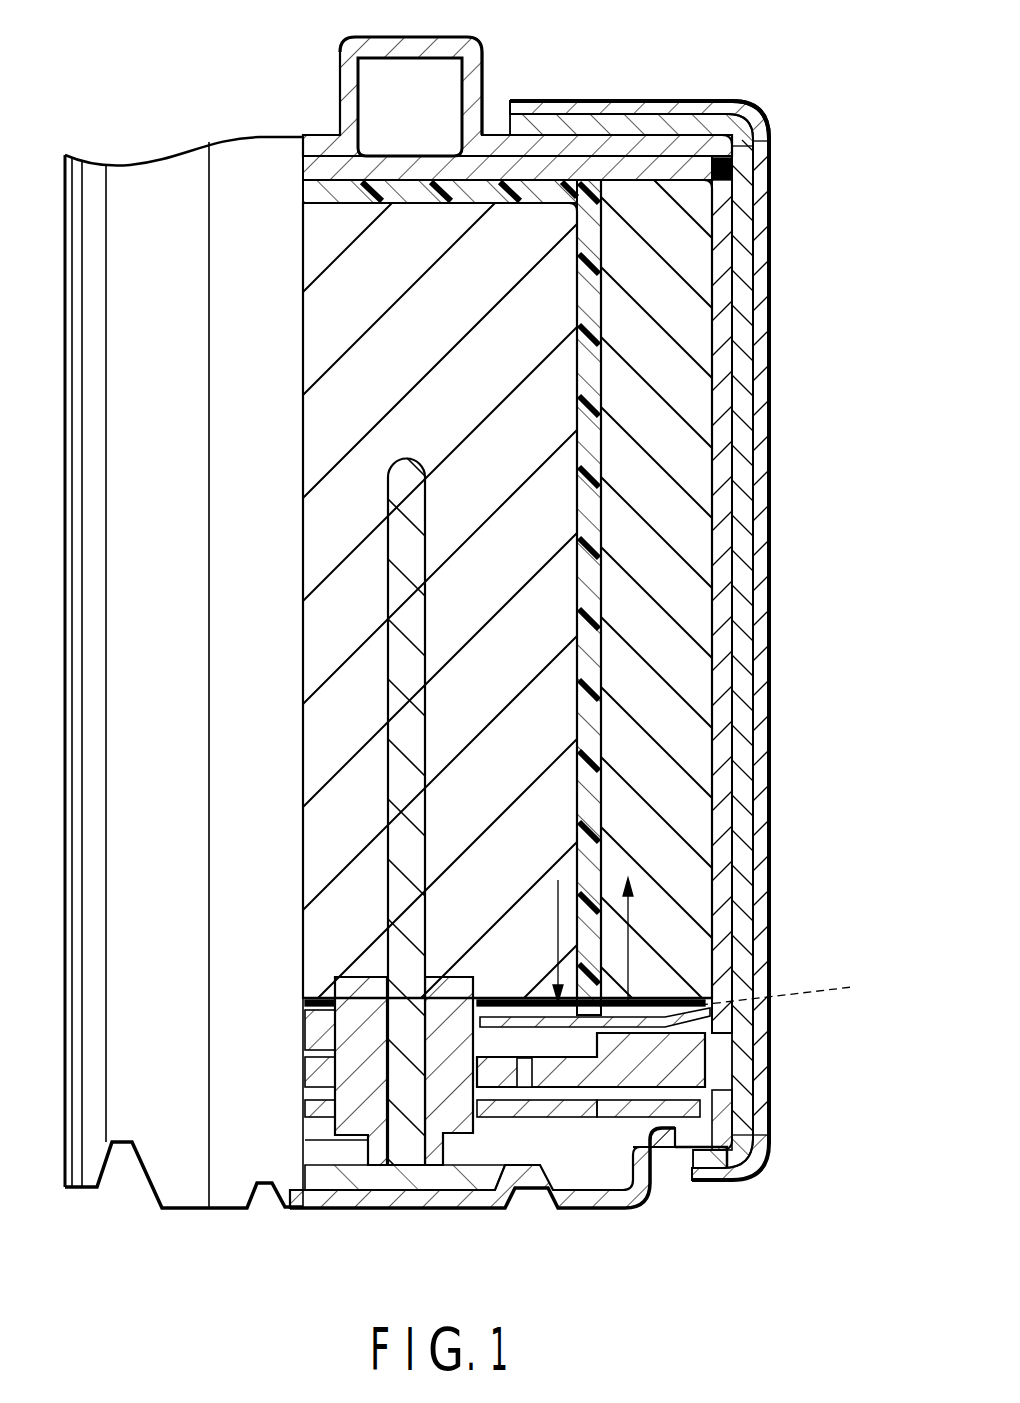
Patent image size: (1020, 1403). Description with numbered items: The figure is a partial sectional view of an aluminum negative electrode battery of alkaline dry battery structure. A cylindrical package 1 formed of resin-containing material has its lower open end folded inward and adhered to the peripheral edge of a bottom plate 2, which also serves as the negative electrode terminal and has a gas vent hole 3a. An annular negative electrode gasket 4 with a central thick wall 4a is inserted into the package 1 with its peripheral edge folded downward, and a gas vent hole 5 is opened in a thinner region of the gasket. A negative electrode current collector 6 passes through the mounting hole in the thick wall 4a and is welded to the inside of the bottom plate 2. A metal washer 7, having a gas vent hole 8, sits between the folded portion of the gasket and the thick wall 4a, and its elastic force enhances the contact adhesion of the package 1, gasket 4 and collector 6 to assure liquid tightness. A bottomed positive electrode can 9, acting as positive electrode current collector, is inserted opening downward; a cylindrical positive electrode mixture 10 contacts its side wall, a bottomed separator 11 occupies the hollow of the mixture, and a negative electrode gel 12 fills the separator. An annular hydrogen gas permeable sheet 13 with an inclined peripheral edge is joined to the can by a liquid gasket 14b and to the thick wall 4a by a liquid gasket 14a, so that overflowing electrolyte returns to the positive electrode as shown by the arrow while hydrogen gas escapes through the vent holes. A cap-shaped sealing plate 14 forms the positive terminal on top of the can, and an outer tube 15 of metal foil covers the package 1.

The cylindrical package 1 is at (748, 262).
The bottom plate 2 is at (382, 1210).
The gas vent hole 3a is at (652, 1172).
The negative electrode gasket 4 is at (303, 1133).
The thick wall 4a is at (453, 1128).
The gas vent hole 5 is at (522, 1078).
The negative electrode current collector 6 is at (311, 1210).
The metal washer 7 is at (622, 1117).
The gas vent hole 8 is at (598, 1117).
The positive electrode can 9 is at (720, 372).
The positive electrode mixture 10 is at (690, 582).
The separator 11 is at (590, 847).
The negative electrode gel 12 is at (535, 738).
The hydrogen gas permeable sheet 13 is at (705, 1045).
The sealing plate 14 is at (470, 65).
The liquid gasket 14a is at (303, 1021).
The liquid gasket 14b is at (712, 1022).
The outer tube 15 is at (752, 148).